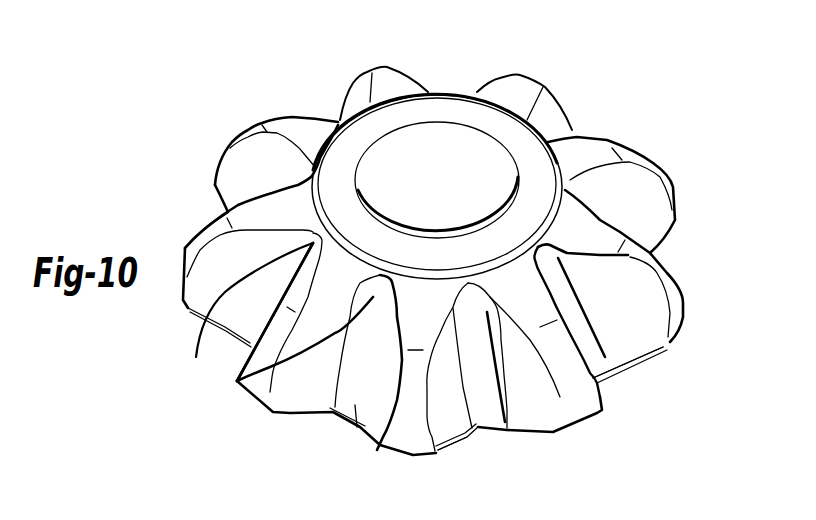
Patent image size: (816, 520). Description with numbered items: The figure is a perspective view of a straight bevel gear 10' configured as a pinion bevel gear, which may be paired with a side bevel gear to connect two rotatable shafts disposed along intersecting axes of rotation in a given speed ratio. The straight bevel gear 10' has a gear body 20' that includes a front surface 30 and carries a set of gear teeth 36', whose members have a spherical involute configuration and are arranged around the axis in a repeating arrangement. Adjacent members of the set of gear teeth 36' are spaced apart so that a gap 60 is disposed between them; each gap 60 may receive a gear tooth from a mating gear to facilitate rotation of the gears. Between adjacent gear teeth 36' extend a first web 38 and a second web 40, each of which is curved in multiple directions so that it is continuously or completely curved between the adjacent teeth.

The straight bevel gear 10' is at (492, 290).
The gear body 20' is at (166, 234).
The front surface 30 is at (428, 110).
The set of gear teeth 36' is at (475, 171).
The first web 38 is at (236, 382).
The second web 40 is at (490, 418).
The gap 60 is at (502, 443).